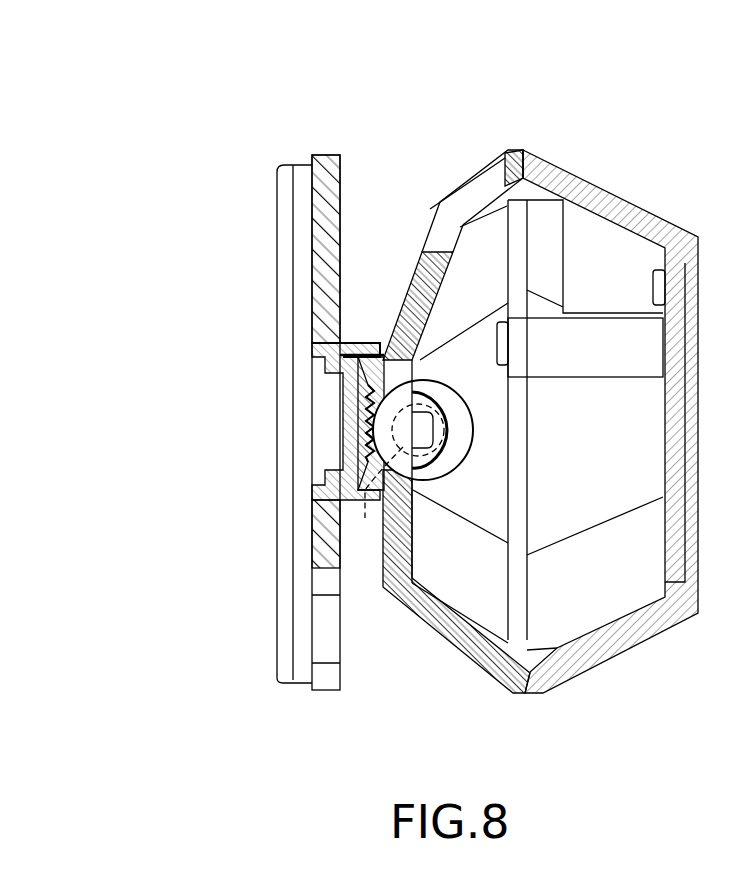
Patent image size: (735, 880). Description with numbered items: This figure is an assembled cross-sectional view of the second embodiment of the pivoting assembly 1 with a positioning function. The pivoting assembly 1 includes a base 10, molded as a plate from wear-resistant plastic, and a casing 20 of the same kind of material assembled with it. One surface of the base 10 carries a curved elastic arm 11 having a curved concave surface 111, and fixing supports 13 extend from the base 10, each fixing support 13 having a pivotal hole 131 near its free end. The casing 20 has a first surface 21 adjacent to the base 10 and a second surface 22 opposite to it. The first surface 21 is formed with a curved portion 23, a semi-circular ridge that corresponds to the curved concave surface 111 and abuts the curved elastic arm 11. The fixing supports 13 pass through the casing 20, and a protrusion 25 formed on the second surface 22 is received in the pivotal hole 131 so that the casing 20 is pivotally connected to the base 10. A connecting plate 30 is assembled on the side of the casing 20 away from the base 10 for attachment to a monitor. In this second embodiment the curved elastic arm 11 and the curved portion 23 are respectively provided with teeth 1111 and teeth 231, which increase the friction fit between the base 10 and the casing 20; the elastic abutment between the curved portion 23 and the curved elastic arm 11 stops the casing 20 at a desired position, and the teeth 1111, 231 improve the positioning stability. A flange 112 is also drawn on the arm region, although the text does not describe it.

The pivoting assembly 1 is at (352, 92).
The base 10 is at (327, 197).
The curved elastic arm 11 is at (163, 383).
The curved concave surface 111 is at (345, 428).
The teeth 1111 is at (338, 447).
The flange 112 is at (323, 360).
The fixing support 13 is at (453, 460).
The pivotal hole 131 is at (392, 475).
The casing 20 is at (497, 162).
The first surface 21 is at (408, 283).
The second surface 22 is at (420, 548).
The curved portion 23 is at (375, 350).
The teeth 231 is at (355, 352).
The protrusion 25 is at (427, 423).
The connecting plate 30 is at (625, 212).